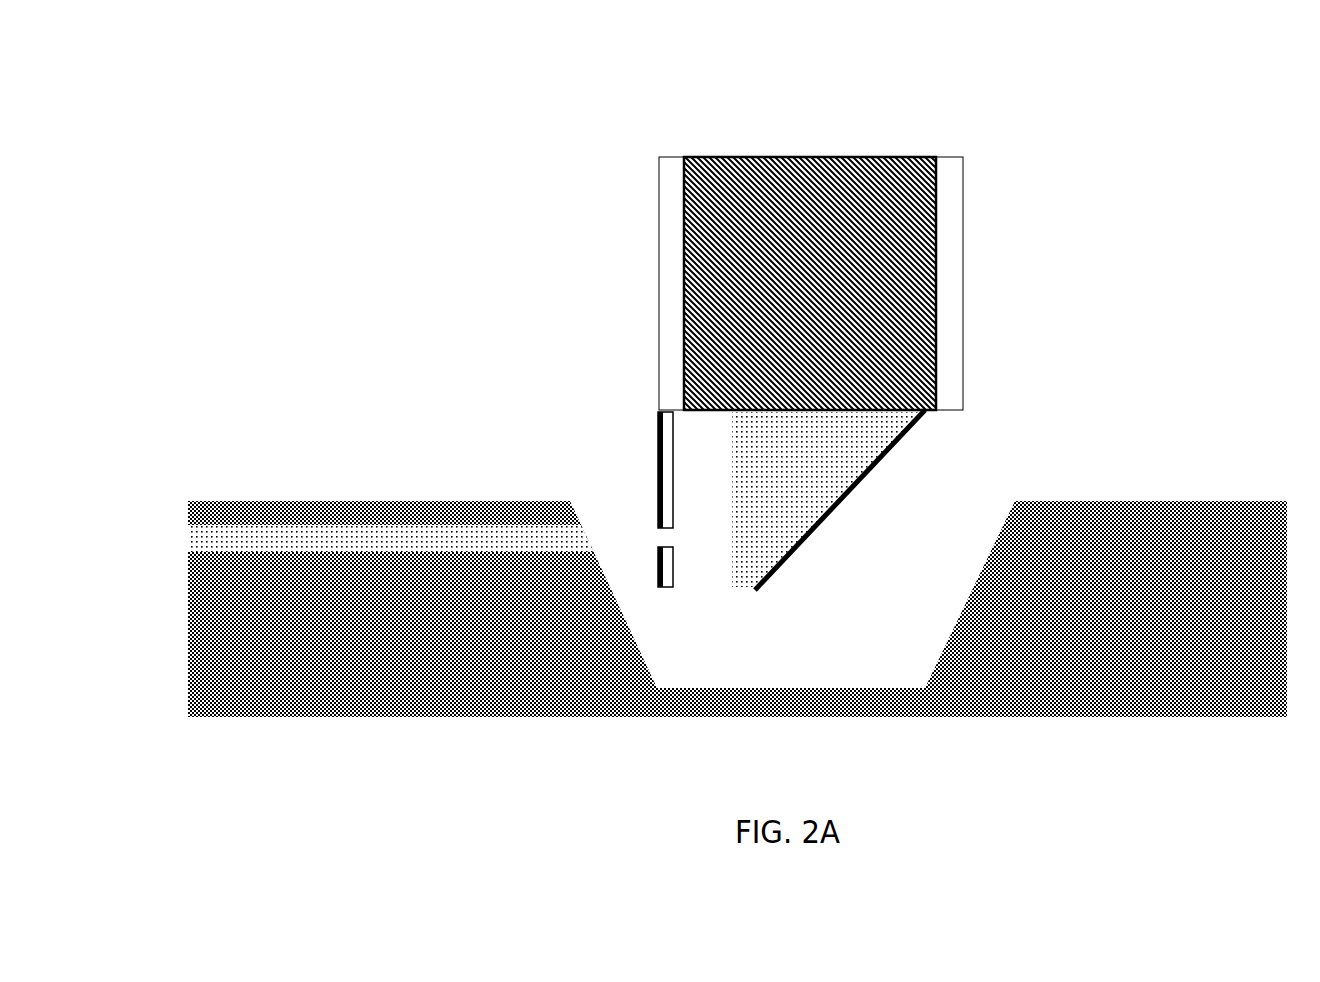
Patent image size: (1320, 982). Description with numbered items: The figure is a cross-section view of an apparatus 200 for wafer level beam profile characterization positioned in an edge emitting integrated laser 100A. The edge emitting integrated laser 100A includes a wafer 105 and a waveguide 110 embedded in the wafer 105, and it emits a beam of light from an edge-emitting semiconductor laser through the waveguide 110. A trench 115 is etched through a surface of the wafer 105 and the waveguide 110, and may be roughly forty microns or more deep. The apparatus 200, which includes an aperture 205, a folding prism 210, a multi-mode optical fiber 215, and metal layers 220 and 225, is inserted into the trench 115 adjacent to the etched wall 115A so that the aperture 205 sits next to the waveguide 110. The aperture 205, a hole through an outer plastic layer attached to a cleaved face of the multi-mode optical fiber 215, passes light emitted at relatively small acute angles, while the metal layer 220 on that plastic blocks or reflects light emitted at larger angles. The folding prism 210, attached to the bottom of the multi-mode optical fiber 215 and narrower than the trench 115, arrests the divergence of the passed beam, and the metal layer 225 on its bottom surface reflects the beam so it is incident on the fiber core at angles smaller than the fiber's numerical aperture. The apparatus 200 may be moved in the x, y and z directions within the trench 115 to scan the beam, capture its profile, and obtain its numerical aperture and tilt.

The edge emitting integrated laser 100A is at (701, 629).
The wafer 105 is at (188, 622).
The waveguide 110 is at (188, 535).
The trench 115 is at (987, 504).
The etched wall 115A is at (567, 512).
The apparatus 200 is at (727, 307).
The aperture 205 is at (652, 537).
The folding prism 210 is at (730, 500).
The multi-mode optical fiber 215 is at (718, 157).
The metal layer 220 is at (658, 443).
The metal layer 225 is at (870, 463).